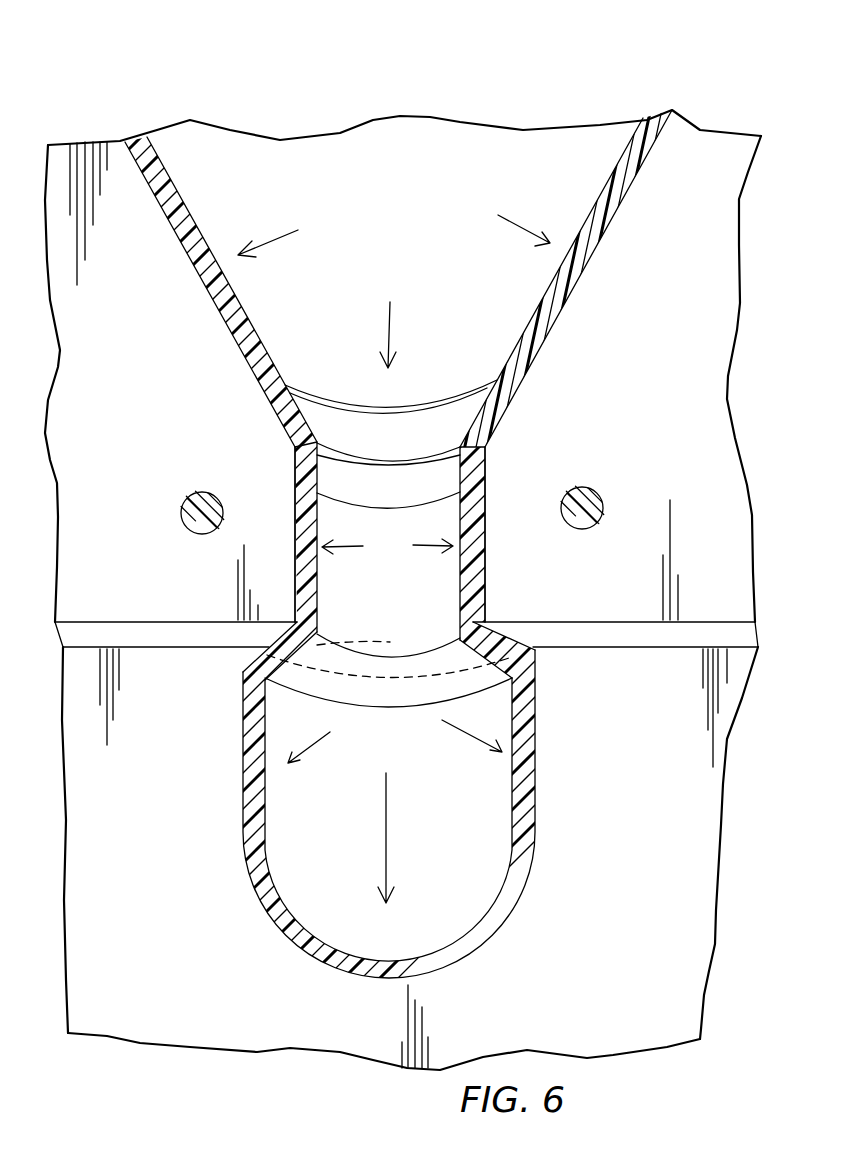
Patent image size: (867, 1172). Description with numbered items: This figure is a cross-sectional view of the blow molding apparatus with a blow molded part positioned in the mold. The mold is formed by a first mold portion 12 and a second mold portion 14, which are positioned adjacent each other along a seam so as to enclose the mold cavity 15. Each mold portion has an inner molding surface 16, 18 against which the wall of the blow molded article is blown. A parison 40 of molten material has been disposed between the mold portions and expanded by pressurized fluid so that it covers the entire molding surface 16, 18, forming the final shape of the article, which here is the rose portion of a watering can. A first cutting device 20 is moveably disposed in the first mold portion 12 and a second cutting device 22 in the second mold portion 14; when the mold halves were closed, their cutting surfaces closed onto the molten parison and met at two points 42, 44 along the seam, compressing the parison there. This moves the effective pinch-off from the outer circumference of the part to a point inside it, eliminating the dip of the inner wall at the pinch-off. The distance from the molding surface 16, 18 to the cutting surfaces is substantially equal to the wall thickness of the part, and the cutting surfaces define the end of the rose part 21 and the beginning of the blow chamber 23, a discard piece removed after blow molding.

The first mold portion 12 is at (427, 317).
The second mold portion 14 is at (394, 490).
The mold cavity 15 is at (423, 485).
The inner molding surface 16 is at (345, 423).
The inner molding surface 18 is at (337, 521).
The first cutting device 20 is at (377, 642).
The rose part 21 is at (305, 380).
The second cutting device 22 is at (440, 633).
The blow chamber 23 is at (522, 740).
The parison 40 is at (612, 205).
The meeting point 42 is at (493, 628).
The meeting point 44 is at (290, 625).